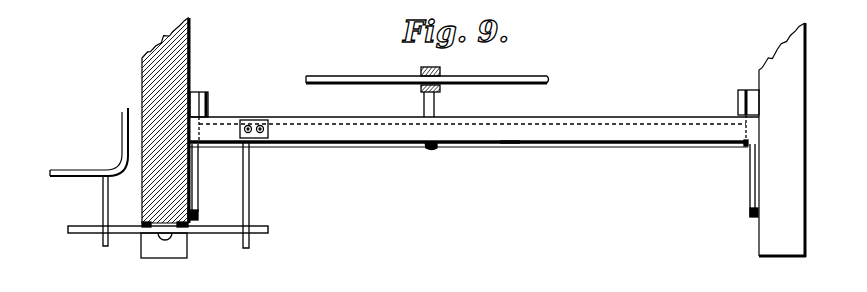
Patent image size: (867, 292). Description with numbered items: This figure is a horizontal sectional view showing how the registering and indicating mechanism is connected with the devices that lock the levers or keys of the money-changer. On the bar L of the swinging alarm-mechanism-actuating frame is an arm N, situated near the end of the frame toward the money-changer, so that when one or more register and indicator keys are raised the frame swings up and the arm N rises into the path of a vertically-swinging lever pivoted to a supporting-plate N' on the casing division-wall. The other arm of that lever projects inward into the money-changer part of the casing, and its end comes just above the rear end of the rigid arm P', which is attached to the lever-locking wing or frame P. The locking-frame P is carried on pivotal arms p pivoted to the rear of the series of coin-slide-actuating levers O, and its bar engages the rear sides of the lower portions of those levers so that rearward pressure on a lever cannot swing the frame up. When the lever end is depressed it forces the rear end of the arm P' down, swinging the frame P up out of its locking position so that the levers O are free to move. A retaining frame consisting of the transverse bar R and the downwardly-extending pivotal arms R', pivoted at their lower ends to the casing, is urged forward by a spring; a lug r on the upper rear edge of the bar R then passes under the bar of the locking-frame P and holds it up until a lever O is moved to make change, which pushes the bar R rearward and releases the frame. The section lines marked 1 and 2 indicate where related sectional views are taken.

The bar of the swinging alarm-mechanism-actuating frame L is at (91, 176).
The arm N is at (90, 211).
The supporting-plate N' is at (152, 214).
The coin-slide-actuating lever O is at (436, 112).
The lever-locking wing or frame P is at (505, 154).
The rigid arm P' is at (263, 195).
The transverse bar R is at (474, 145).
The downwardly-extending pivotal arm R' is at (474, 103).
The pivotal arm p is at (199, 199).
The lug r is at (432, 149).
The section line 1 is at (347, 261).
The section line 2 is at (350, 35).